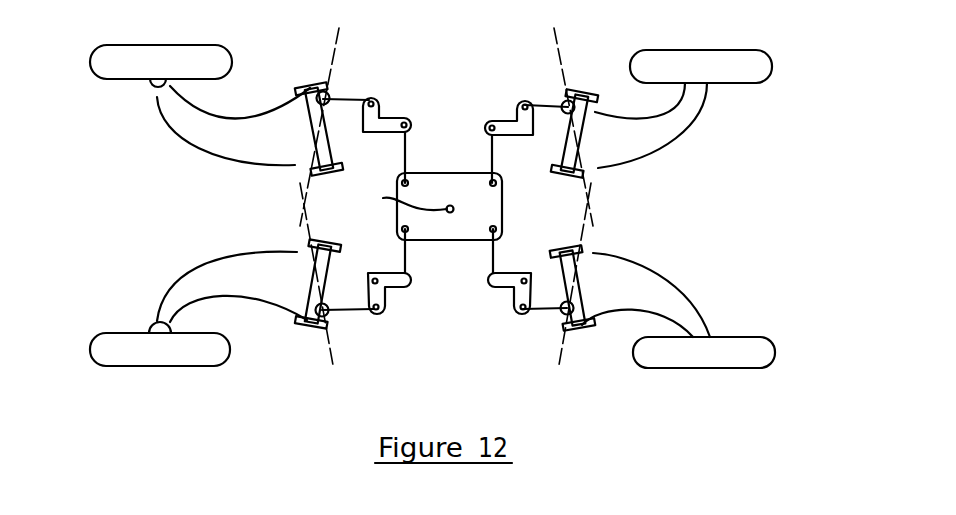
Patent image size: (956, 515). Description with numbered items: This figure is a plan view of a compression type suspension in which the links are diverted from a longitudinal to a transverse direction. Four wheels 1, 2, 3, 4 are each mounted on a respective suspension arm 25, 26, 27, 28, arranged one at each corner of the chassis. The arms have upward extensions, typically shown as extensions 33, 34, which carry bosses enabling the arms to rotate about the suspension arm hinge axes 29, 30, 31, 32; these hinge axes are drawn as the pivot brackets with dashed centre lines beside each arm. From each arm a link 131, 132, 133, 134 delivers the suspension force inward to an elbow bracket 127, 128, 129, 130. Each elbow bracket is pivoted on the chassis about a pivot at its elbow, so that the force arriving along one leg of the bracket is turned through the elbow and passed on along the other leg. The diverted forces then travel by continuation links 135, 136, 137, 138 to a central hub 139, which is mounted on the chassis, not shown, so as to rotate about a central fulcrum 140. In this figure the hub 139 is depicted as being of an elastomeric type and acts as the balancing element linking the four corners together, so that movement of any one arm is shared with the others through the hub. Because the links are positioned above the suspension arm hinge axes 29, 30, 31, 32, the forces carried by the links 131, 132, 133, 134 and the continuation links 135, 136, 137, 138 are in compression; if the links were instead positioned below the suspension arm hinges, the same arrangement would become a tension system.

The wheel 1 is at (98, 337).
The wheel 2 is at (101, 52).
The wheel 3 is at (750, 57).
The wheel 4 is at (760, 350).
The arm 25 is at (202, 277).
The arm 26 is at (223, 127).
The arm 27 is at (594, 114).
The arm 28 is at (638, 278).
The suspension arm hinge axis 29 is at (333, 363).
The suspension arm hinge axis 30 is at (333, 58).
The suspension arm hinge axis 31 is at (562, 58).
The suspension arm hinge axis 32 is at (560, 347).
The upward extension 33 is at (318, 328).
The upward extension 34 is at (562, 325).
The elbow bracket 127 is at (373, 110).
The elbow bracket 128 is at (500, 118).
The elbow bracket 129 is at (520, 263).
The elbow bracket 130 is at (387, 273).
The link 131 is at (352, 98).
The link 132 is at (541, 102).
The link 133 is at (548, 310).
The link 134 is at (352, 310).
The continuation link 135 is at (403, 163).
The continuation link 136 is at (527, 160).
The continuation link 137 is at (493, 250).
The continuation link 138 is at (406, 253).
The central hub 139 is at (483, 202).
The central fulcrum 140 is at (402, 199).